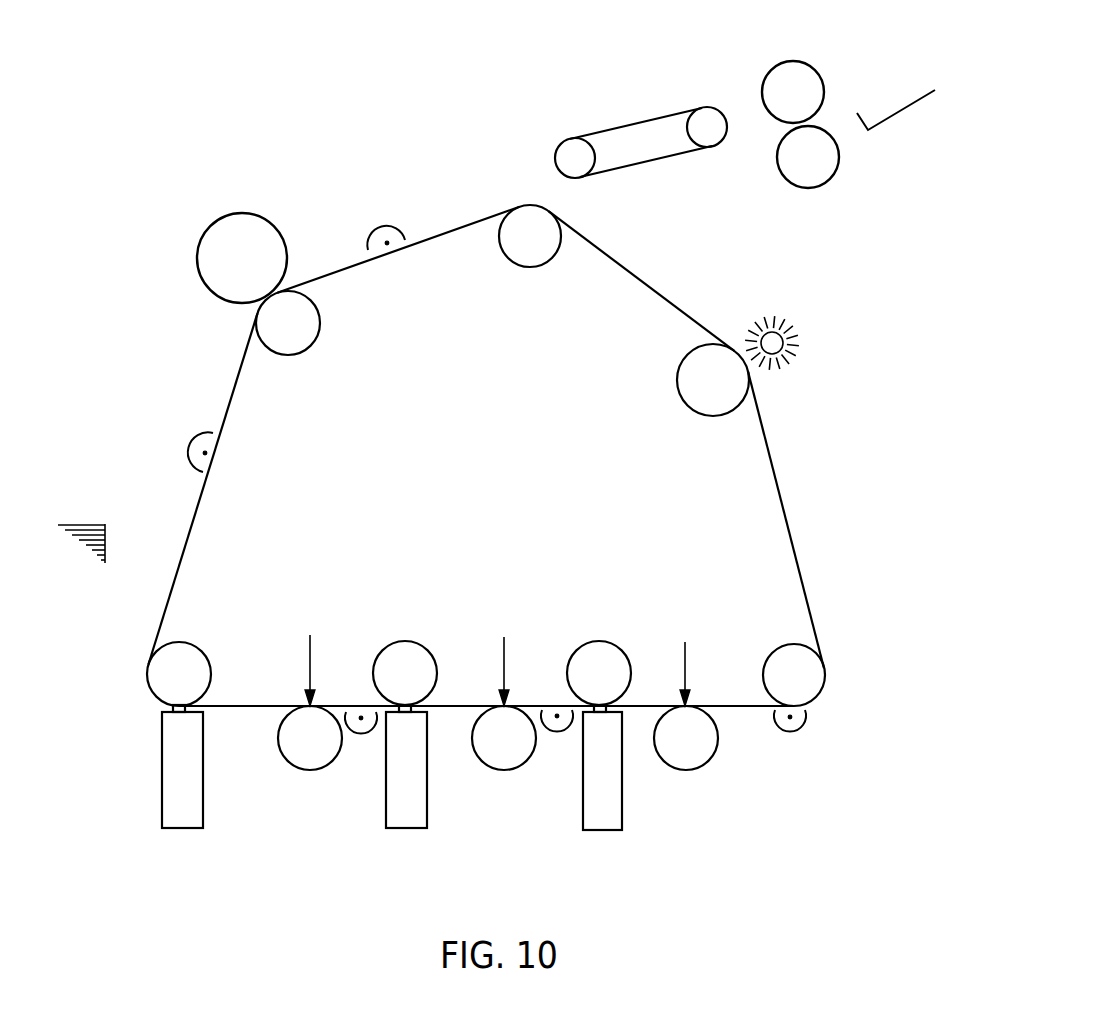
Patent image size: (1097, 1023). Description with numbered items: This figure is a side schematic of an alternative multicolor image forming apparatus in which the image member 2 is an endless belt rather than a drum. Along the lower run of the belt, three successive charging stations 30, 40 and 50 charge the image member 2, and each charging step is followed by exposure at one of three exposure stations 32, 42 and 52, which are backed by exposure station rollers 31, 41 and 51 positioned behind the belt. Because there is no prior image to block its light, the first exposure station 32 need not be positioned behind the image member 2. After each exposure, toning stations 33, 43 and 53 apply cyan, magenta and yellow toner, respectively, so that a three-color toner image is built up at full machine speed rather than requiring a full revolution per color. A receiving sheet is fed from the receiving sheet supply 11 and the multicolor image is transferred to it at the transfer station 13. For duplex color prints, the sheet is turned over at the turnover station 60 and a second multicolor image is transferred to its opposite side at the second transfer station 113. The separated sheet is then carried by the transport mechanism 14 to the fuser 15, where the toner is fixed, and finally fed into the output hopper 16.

The image member 2 is at (793, 538).
The receiving sheet supply 11 is at (107, 545).
The transfer station 13 is at (188, 443).
The transport mechanism 14 is at (627, 122).
The fuser 15 is at (802, 62).
The output hopper 16 is at (890, 118).
The charging station 30 is at (793, 732).
The exposure station roller 31 is at (705, 763).
The exposure station 32 is at (685, 655).
The toning station 33 is at (612, 823).
The charging station 40 is at (557, 732).
The exposure station roller 41 is at (515, 768).
The exposure station 42 is at (504, 655).
The toning station 43 is at (415, 830).
The charging station 50 is at (360, 735).
The exposure station roller 51 is at (312, 768).
The exposure station 52 is at (312, 650).
The toning station 53 is at (192, 830).
The turnover station 60 is at (278, 232).
The second transfer station 113 is at (397, 223).